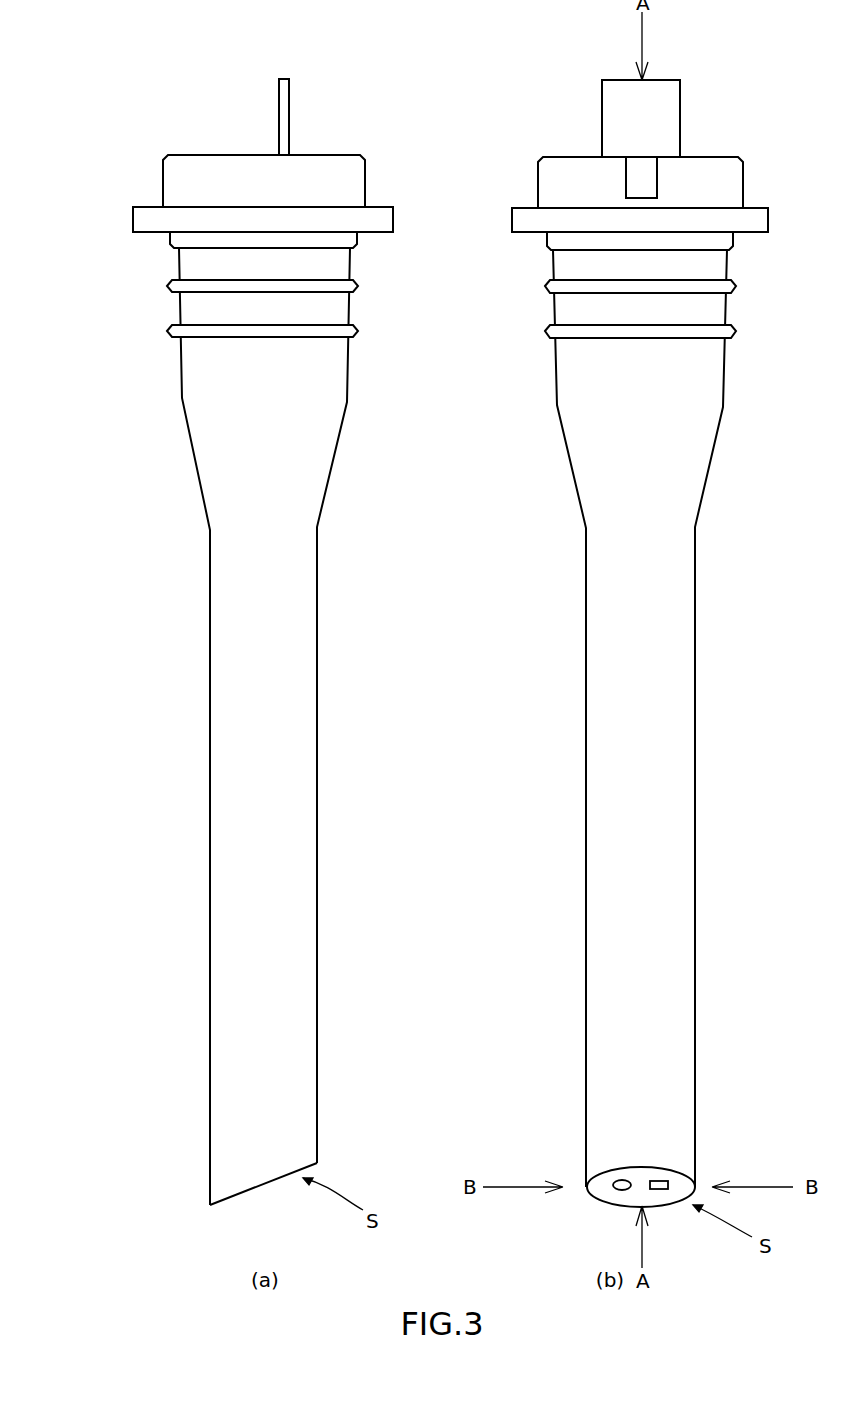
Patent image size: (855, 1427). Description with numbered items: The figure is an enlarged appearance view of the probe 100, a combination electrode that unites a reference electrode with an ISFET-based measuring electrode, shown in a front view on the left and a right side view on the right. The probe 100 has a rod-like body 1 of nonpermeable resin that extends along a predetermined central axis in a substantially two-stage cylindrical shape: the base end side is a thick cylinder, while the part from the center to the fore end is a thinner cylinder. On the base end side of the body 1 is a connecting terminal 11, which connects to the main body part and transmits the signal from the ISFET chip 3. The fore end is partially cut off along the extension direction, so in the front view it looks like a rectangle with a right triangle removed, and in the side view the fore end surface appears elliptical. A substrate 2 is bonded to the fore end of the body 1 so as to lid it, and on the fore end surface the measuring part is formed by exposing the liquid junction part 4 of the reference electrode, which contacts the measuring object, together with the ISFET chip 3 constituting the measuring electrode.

The probe 100 is at (406, 665).
The body 1 is at (209, 615).
The connecting terminal 11 is at (279, 103).
The substrate 2 is at (275, 1183).
The ISFET chip 3 is at (659, 1180).
The liquid junction part 4 is at (622, 1178).